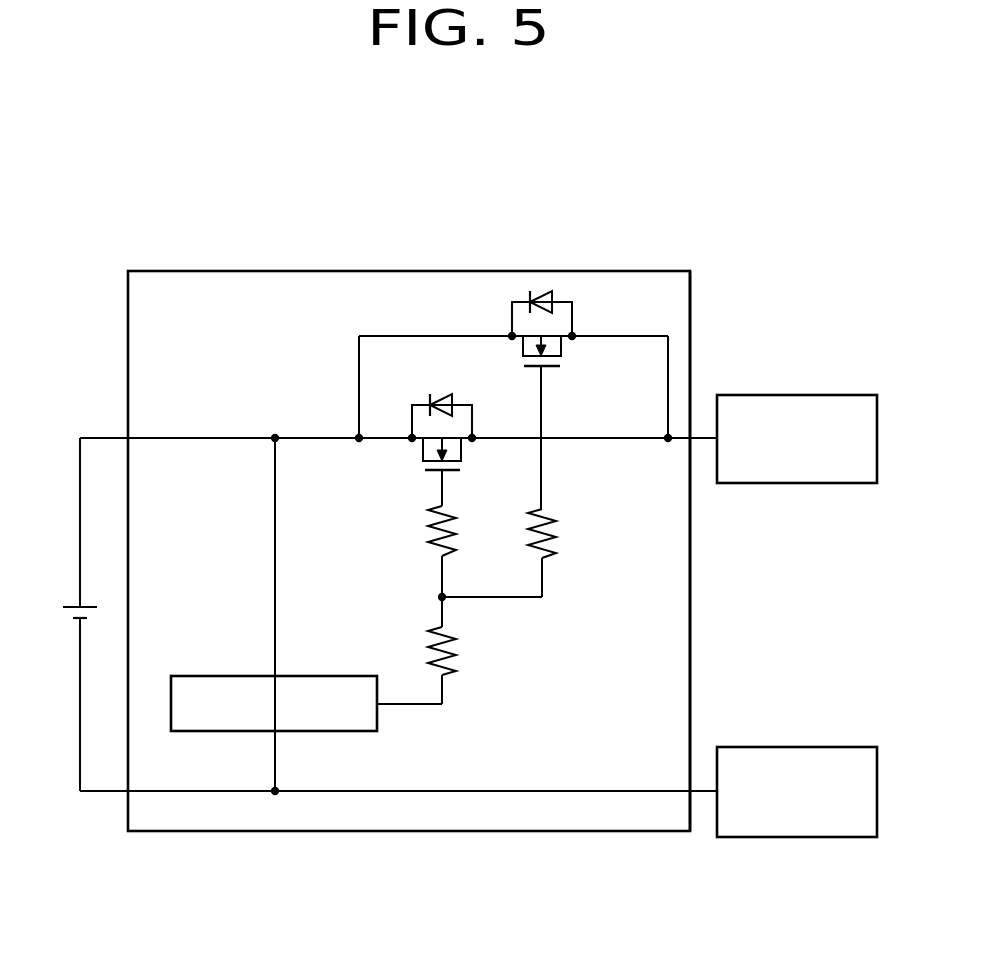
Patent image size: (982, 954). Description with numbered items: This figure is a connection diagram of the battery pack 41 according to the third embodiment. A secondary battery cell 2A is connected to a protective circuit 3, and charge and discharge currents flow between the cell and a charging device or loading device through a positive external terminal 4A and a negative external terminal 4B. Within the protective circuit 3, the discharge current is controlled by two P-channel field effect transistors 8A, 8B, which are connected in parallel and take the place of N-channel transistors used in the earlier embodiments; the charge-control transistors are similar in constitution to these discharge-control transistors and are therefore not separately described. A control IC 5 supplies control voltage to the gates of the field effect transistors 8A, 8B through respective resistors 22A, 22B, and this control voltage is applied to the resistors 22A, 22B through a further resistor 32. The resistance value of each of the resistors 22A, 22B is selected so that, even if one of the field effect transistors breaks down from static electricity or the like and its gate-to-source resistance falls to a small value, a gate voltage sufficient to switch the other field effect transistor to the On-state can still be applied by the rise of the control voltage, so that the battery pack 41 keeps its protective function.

The battery pack 41 is at (592, 226).
The protective circuit 3 is at (691, 550).
The battery cell 2A is at (68, 606).
The control IC 5 is at (205, 675).
The P-channel field effect transistor 8A is at (422, 449).
The P-channel field effect transistor 8B is at (565, 345).
The resistor 22A is at (430, 529).
The resistor 22B is at (553, 522).
The resistor 32 is at (452, 656).
The positive external terminal 4A is at (796, 394).
The negative external terminal 4B is at (796, 746).